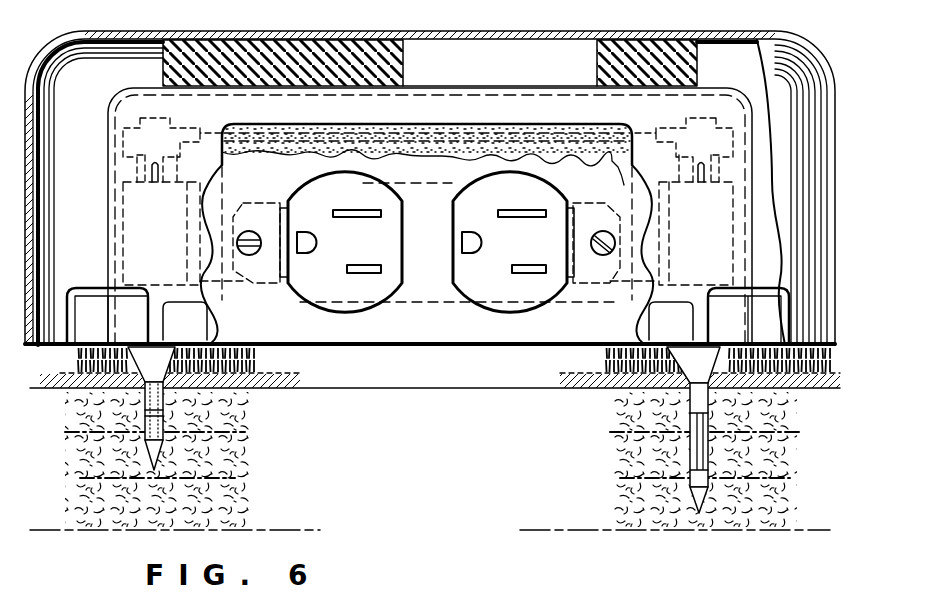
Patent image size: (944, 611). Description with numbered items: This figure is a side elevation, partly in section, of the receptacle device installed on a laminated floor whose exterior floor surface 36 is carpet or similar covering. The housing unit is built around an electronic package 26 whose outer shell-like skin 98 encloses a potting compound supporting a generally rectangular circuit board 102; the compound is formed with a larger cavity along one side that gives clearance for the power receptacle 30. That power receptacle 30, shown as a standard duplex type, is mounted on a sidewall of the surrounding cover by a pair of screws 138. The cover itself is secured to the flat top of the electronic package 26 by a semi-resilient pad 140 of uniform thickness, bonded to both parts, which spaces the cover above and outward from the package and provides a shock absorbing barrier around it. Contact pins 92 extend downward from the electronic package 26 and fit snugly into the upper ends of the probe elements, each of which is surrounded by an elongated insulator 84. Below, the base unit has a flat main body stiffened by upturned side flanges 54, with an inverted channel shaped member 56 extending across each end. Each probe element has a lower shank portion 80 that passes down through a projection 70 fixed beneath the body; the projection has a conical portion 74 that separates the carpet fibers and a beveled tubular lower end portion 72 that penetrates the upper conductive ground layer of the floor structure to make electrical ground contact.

The electronic package 26 is at (94, 133).
The power receptacle 30 is at (478, 298).
The exterior floor surface 36 is at (76, 355).
The upturned side flanges 54 is at (334, 341).
The inverted channel shaped member 56 is at (96, 288).
The projections 70 is at (652, 405).
The tubular lower end portion 72 is at (745, 405).
The conical portion 74 is at (692, 363).
The lower shank portion 80 is at (682, 458).
The elongated insulator 84 is at (130, 229).
The contact pins 92 is at (138, 172).
The outer shell-like skin 98 is at (156, 315).
The circuit board 102 is at (642, 120).
The screws 138 is at (251, 254).
The semi-resilient pad 140 is at (492, 71).